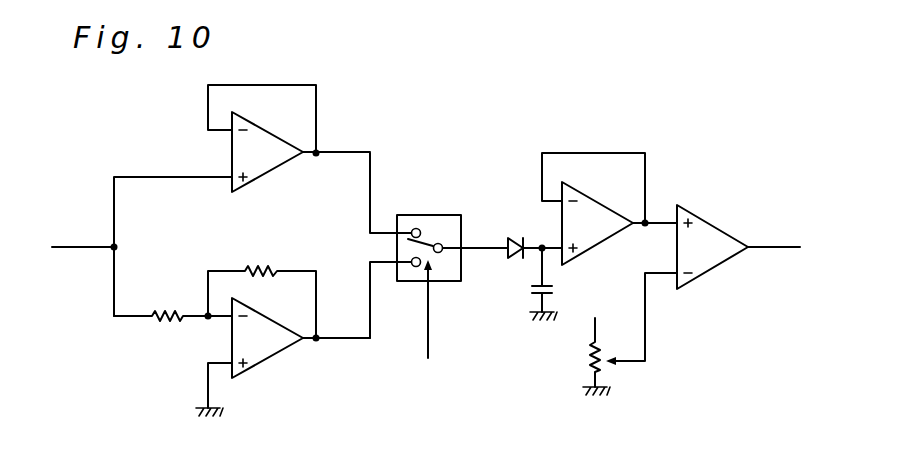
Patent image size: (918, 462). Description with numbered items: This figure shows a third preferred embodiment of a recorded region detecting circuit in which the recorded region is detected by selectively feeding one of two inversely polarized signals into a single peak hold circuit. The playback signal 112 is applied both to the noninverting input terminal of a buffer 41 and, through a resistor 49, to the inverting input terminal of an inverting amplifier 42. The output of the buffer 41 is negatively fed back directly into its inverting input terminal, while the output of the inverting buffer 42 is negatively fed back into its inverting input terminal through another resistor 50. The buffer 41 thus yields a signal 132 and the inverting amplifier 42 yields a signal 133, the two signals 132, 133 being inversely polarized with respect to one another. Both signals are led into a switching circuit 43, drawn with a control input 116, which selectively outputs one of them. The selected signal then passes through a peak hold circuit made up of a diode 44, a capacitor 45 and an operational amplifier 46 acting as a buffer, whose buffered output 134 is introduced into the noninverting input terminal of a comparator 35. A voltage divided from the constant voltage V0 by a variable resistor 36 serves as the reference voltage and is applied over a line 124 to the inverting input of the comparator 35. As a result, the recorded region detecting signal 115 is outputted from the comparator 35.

The playback signal 112 is at (88, 246).
The buffer 41 is at (267, 175).
The inverting amplifier 42 is at (267, 362).
The resistor 49 is at (163, 325).
The resistor 50 is at (266, 266).
The signal 132 is at (345, 150).
The signal 133 is at (350, 340).
The switching circuit 43 is at (430, 214).
The switch control signal 116 is at (430, 328).
The diode 44 is at (522, 238).
The capacitor 45 is at (530, 292).
The operational amplifier 46 is at (607, 205).
The buffered signal line 134 is at (661, 221).
The comparator 35 is at (715, 222).
The variable resistor 36 is at (583, 360).
The reference voltage line 124 is at (648, 323).
The recorded region detecting signal 115 is at (773, 250).